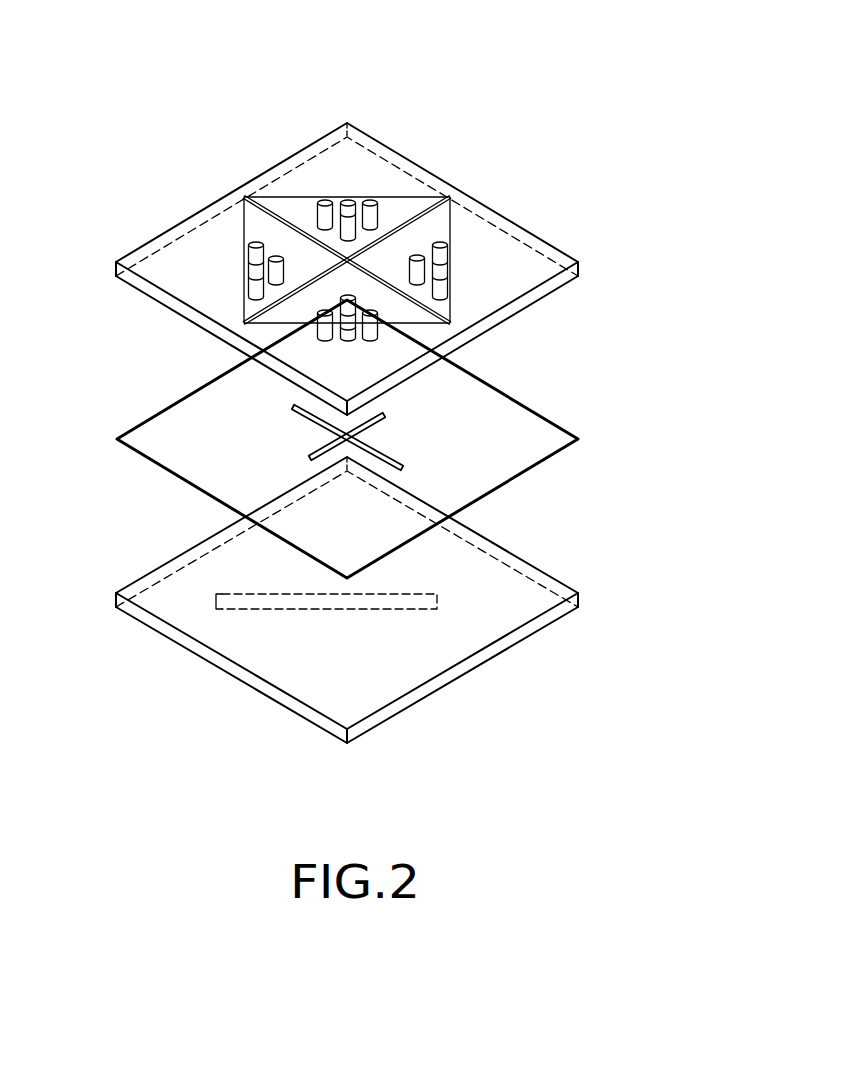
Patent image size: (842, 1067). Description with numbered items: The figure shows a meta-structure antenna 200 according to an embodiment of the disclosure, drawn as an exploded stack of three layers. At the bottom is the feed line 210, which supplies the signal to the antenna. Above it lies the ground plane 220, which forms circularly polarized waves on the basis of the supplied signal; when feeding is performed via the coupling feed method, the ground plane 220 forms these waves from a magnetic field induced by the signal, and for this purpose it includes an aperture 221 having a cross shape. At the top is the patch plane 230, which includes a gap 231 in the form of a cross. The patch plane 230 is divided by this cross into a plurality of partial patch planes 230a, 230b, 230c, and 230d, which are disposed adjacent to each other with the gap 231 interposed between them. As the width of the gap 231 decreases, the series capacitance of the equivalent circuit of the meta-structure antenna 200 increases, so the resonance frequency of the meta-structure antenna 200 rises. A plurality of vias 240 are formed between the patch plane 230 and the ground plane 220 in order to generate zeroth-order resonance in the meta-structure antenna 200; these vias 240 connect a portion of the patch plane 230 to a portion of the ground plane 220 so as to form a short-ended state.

The meta-structure antenna 200 is at (333, 40).
The feed line 210 is at (216, 600).
The ground plane 220 is at (158, 440).
The aperture 221 is at (312, 417).
The patch plane 230 is at (240, 297).
The partial patch plane 230a is at (297, 207).
The partial patch plane 230b is at (253, 233).
The partial patch plane 230c is at (415, 318).
The partial patch plane 230d is at (445, 303).
The gap 231 is at (250, 262).
The vias 240 is at (262, 262).